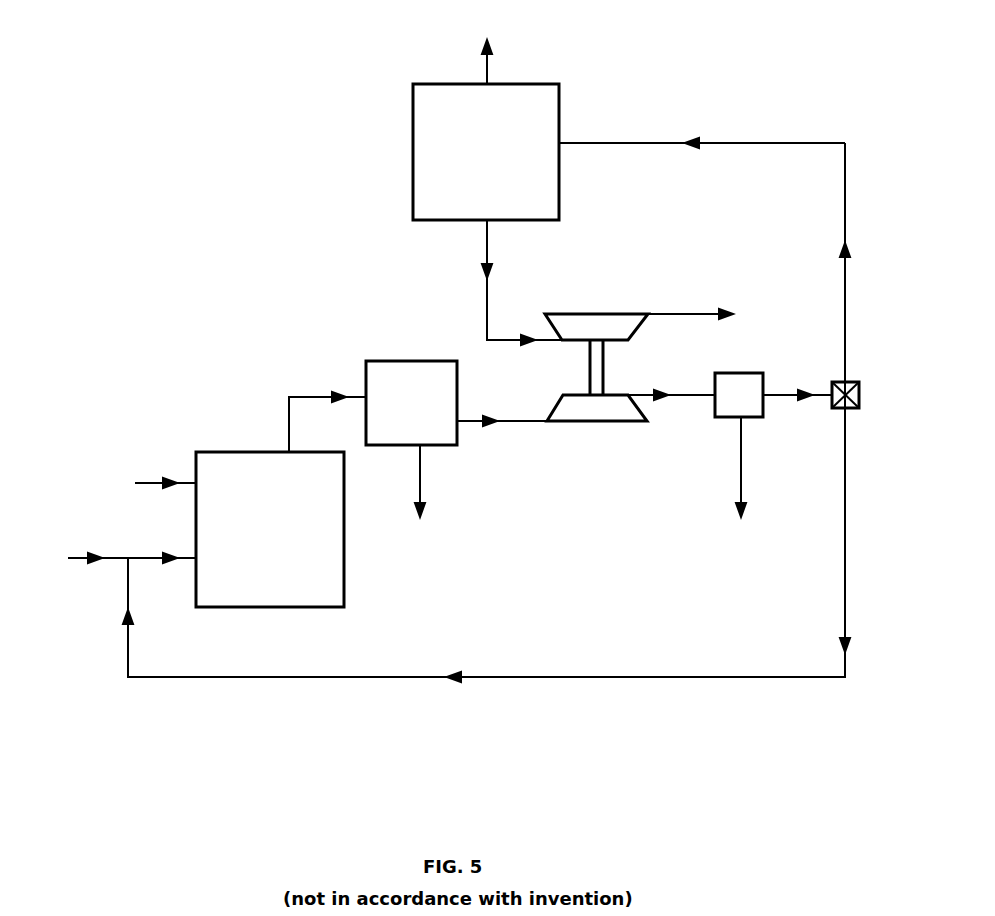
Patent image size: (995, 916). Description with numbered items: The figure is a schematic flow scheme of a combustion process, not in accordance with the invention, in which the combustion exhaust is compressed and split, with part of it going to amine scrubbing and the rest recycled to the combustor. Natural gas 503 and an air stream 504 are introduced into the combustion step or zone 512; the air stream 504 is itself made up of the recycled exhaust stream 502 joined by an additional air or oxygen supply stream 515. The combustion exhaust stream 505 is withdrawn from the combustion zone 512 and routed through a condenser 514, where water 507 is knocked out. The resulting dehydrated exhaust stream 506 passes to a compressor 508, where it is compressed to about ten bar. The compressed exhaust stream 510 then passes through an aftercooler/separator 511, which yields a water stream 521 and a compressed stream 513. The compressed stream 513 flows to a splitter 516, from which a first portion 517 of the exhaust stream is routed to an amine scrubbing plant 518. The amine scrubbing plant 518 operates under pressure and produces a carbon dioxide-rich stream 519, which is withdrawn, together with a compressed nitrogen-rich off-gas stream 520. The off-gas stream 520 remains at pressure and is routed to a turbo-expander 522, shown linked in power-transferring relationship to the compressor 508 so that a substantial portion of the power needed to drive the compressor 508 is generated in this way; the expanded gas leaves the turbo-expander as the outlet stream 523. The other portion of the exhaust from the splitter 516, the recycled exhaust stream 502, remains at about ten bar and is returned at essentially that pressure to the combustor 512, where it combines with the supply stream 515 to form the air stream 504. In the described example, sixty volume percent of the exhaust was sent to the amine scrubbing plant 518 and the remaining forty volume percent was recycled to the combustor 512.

The recycled exhaust stream 502 is at (486, 423).
The natural gas 503 is at (144, 485).
The air stream 504 is at (162, 547).
The combustion exhaust stream 505 is at (327, 411).
The dehydrated exhaust stream 506 is at (502, 409).
The water 507 is at (422, 497).
The compressor 508 is at (592, 422).
The compressed exhaust stream 510 is at (671, 385).
The aftercooler/separator 511 is at (722, 417).
The combustion step or zone 512 is at (227, 452).
The compressed stream 513 is at (797, 385).
The condenser 514 is at (418, 361).
The additional air or oxygen supply stream 515 is at (92, 547).
The splitter 516 is at (837, 410).
The first portion of the exhaust stream 517 is at (702, 157).
The amine scrubbing plant 518 is at (413, 155).
The carbon dioxide-rich stream 519 is at (486, 47).
The compressed nitrogen-rich off-gas stream 520 is at (522, 282).
The water stream 521 is at (741, 481).
The turbo-expander 522 is at (607, 314).
The outlet line 523 is at (715, 315).